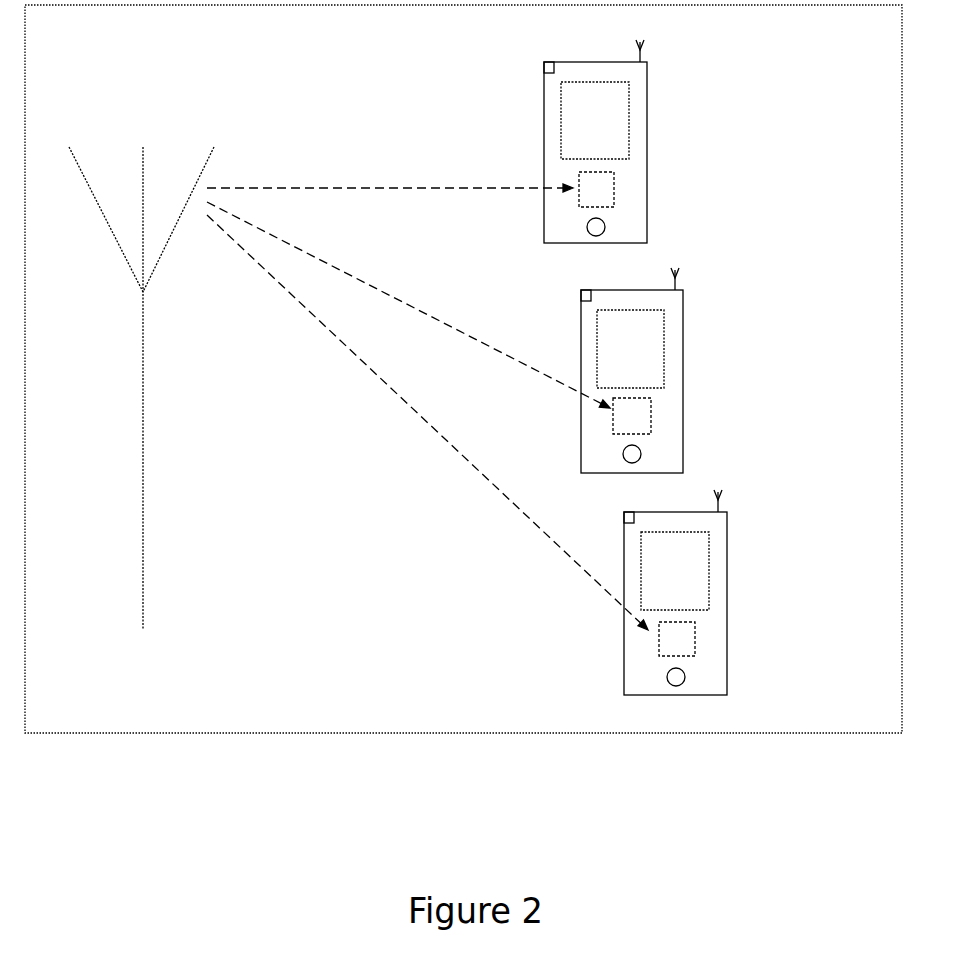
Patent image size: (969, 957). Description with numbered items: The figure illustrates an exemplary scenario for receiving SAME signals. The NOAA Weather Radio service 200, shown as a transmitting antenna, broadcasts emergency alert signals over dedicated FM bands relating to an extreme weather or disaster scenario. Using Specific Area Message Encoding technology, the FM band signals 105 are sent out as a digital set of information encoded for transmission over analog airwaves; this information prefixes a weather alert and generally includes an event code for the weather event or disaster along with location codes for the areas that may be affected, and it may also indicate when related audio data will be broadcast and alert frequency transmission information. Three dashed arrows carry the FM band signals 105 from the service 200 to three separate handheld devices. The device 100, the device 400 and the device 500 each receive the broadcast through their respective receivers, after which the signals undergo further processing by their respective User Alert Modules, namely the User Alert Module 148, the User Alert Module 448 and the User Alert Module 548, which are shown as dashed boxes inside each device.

The device 100 is at (700, 112).
The User Alert Module 148 is at (614, 188).
The device 400 is at (737, 352).
The User Alert Module 448 is at (651, 415).
The device 500 is at (790, 588).
The User Alert Module 548 is at (695, 634).
The FM band signals 105 is at (485, 430).
The NOAA Weather Radio service 200 is at (163, 694).